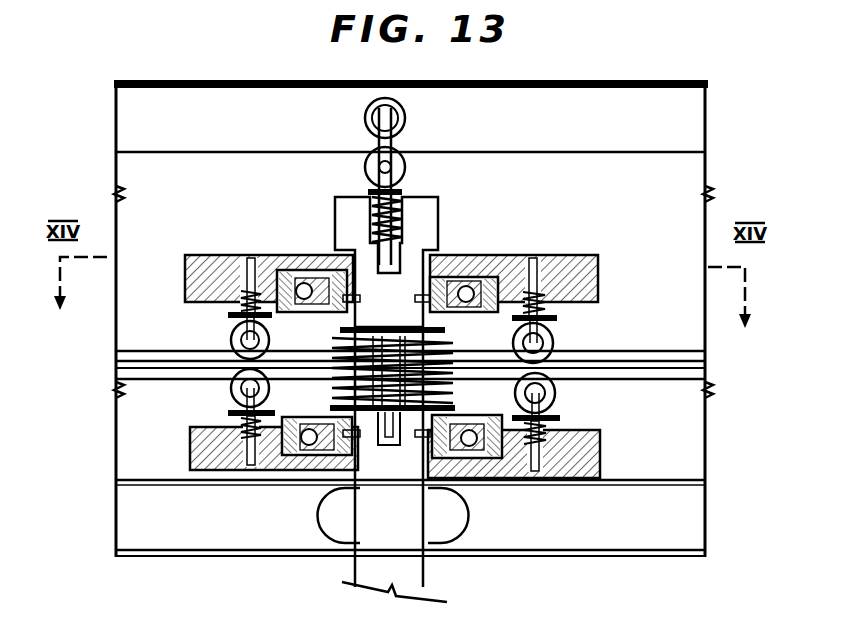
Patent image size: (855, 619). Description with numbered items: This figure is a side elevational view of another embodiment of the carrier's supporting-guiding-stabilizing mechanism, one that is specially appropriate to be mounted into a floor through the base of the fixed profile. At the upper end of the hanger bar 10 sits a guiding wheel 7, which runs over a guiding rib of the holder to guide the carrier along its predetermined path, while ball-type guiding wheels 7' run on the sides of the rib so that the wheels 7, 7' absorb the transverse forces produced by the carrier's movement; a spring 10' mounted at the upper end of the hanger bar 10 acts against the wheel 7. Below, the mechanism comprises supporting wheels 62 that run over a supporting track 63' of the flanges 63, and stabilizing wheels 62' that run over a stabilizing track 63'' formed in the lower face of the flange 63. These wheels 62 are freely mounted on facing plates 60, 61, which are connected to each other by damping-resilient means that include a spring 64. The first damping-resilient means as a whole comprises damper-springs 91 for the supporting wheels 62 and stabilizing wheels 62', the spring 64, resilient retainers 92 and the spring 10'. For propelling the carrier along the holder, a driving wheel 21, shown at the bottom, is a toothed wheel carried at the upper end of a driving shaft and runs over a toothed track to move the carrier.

The guiding wheel 7 is at (412, 186).
The guiding wheels 7' is at (415, 118).
The hanger bar 10 is at (420, 262).
The spring 10' is at (444, 212).
The driving wheel 21 is at (354, 533).
The facing plate 60 is at (590, 287).
The facing plate 61 is at (590, 466).
The supporting wheel 62 is at (573, 310).
The stabilizing wheel 62' is at (573, 422).
The flange 63 is at (444, 379).
The supporting track 63' is at (439, 350).
The stabilizing track 63'' is at (448, 407).
The spring 64 is at (455, 352).
The damper-springs 91 is at (222, 310).
The resilient retainers 92 is at (386, 392).